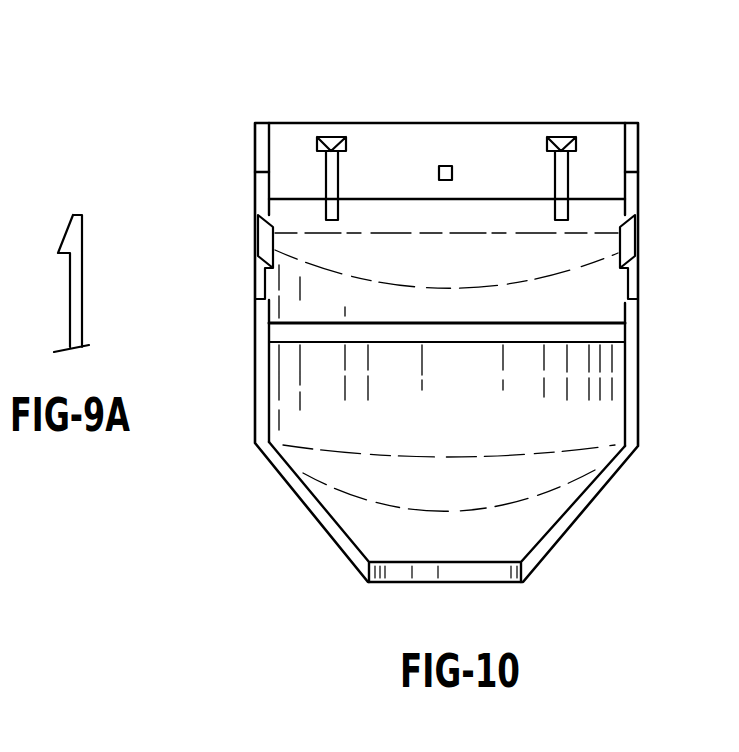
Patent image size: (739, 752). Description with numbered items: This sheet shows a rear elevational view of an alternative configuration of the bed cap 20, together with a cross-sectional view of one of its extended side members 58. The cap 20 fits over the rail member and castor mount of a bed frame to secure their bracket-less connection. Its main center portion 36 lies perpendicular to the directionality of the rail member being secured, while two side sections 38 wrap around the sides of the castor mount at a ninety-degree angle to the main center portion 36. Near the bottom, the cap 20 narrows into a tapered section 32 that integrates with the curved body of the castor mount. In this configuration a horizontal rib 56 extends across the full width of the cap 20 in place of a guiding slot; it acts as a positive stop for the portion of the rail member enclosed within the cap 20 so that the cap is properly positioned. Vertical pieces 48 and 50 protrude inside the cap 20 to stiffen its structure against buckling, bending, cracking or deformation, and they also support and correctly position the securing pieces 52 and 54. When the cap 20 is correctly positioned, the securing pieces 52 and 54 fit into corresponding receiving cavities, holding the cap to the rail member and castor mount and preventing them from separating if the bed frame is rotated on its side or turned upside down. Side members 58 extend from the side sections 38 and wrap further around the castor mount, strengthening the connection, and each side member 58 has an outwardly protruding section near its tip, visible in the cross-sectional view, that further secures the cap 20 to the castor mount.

In FIG. 10, the cap 20 is at (449, 295).
In FIG. 10, the tapered section 32 is at (350, 512).
In FIG. 10, the main center portion 36 is at (580, 315).
In FIG. 10, the side sections 38 is at (272, 312).
In FIG. 10, the vertical piece 48 is at (347, 172).
In FIG. 10, the vertical piece 50 is at (550, 178).
In FIG. 10, the securing piece 52 is at (331, 138).
In FIG. 10, the securing piece 54 is at (563, 138).
In FIG. 10, the horizontal rib 56 is at (278, 332).
In FIG. 9A, the side members 58 is at (78, 238).
In FIG. 10, the side members 58 is at (260, 225).